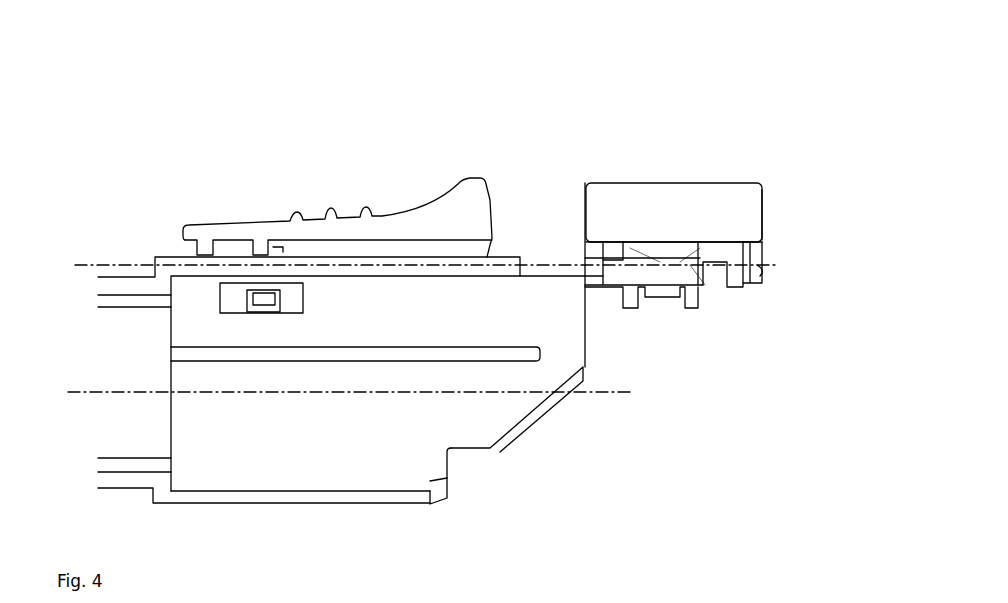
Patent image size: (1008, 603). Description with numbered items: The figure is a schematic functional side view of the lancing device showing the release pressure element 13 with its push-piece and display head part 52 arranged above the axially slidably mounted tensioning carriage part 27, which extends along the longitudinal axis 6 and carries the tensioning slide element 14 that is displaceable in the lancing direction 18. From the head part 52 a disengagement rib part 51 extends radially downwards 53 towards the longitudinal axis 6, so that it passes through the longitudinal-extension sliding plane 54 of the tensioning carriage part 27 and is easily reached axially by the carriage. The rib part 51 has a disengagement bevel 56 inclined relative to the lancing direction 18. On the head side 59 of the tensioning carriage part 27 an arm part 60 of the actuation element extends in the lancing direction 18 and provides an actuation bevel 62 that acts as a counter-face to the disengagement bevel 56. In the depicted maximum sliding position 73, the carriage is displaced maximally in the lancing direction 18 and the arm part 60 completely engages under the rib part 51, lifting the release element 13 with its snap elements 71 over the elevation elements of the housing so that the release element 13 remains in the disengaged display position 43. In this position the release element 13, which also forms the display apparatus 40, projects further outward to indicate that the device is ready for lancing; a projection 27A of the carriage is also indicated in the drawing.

The longitudinal axis 6 is at (70, 393).
The release pressure element 13 is at (762, 203).
The tensioning slide element 14 is at (307, 228).
The lancing direction 18 is at (697, 392).
The tensioning carriage part 27 is at (262, 455).
The base body projection 27A is at (469, 458).
The display apparatus 40 is at (746, 122).
The disengaged display position 43 is at (822, 192).
The disengagement rib part 51 is at (668, 242).
The push-piece and display head part 52 is at (607, 178).
The radially downwards direction 53 is at (800, 205).
The longitudinal-extension sliding plane 54 is at (82, 263).
The disengagement bevel 56 is at (633, 254).
The head side 59 is at (588, 336).
The arm part 60 is at (615, 270).
The actuation bevel 62 is at (694, 259).
The snap element 71 is at (756, 258).
The maximum sliding position 73 is at (387, 158).